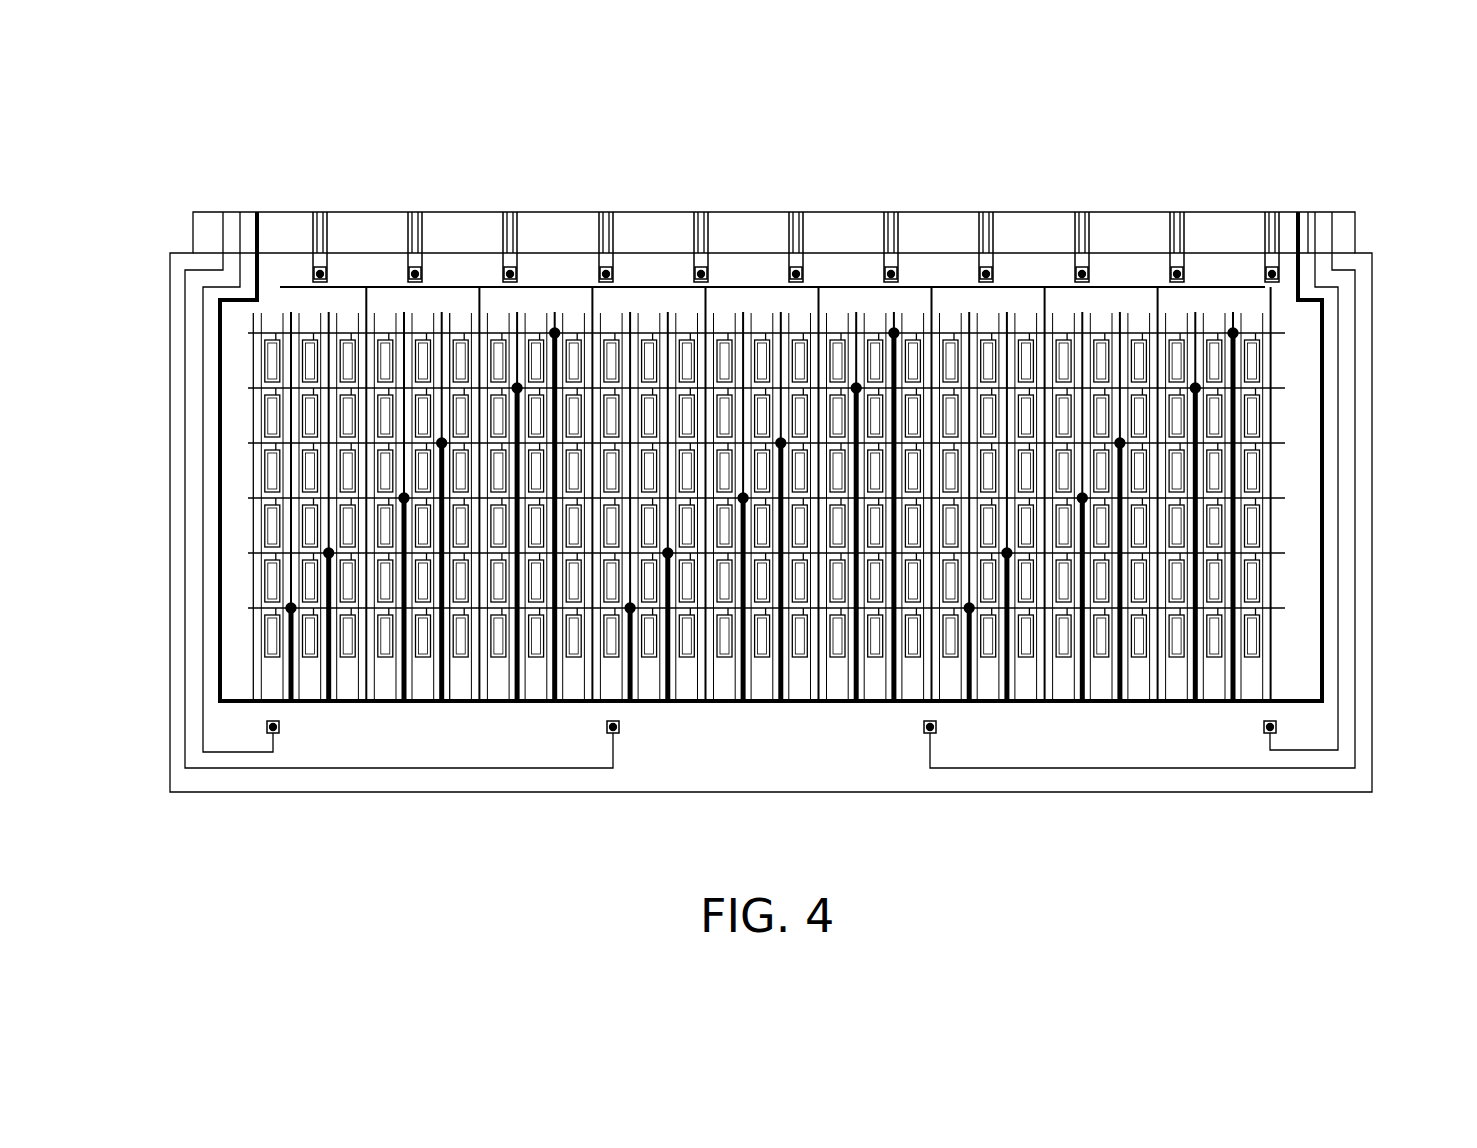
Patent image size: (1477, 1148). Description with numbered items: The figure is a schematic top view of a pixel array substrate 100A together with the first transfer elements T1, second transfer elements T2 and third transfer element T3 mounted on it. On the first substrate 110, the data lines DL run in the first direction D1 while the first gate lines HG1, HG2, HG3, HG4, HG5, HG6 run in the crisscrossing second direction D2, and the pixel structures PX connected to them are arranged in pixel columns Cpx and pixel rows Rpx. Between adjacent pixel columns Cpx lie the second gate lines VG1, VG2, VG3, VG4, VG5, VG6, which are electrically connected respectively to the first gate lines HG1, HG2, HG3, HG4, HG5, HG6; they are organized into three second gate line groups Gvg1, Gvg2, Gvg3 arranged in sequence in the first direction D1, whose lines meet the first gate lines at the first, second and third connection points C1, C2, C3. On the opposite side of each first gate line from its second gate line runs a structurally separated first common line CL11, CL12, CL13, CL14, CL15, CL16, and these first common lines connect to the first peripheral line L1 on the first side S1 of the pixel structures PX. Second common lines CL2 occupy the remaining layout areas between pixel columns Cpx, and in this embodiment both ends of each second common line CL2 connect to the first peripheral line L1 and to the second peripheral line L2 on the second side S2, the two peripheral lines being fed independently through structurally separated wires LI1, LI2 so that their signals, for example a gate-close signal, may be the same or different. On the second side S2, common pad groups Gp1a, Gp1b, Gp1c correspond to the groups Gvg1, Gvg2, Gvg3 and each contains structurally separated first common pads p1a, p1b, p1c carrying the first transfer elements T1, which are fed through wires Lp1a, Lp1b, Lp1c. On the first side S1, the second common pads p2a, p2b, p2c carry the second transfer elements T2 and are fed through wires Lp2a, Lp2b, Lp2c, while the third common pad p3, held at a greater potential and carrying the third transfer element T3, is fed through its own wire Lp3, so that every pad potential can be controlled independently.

The first substrate 110 is at (178, 256).
The pixel array substrate 100A is at (1462, 850).
The wire Lp1c is at (272, 212).
The wire Lp1b is at (900, 235).
The wire Lp1a is at (1280, 232).
The wire Lp2c is at (237, 753).
The wire Lp2b is at (568, 769).
The wire Lp2a is at (1267, 770).
The wire Lp3 is at (1320, 751).
The first transfer element T1 is at (314, 272).
The second transfer element T2 is at (265, 727).
The third transfer element T3 is at (1272, 735).
The first common pad p1c is at (314, 276).
The first common pad p1b is at (606, 283).
The first common pad p1a is at (986, 283).
The second common pad p2c is at (281, 727).
The second common pad p2b is at (621, 727).
The second common pad p2a is at (926, 734).
The third common pad p3 is at (1278, 727).
The common pad group Gp1c is at (411, 838).
The common pad group Gp1b is at (778, 823).
The common pad group Gp1a is at (1106, 883).
The second gate line group Gvg3 is at (548, 118).
The second gate line group Gvg2 is at (888, 118).
The second gate line group Gvg1 is at (1225, 118).
The second gate line VG1 is at (1233, 312).
The second gate line VG2 is at (1195, 312).
The second gate line VG3 is at (1120, 312).
The second gate line VG4 is at (1082, 312).
The second gate line VG5 is at (1028, 183).
The second gate line VG6 is at (969, 312).
The first gate line HG1 is at (1290, 333).
The first gate line HG2 is at (1290, 388).
The first gate line HG3 is at (1290, 443).
The first gate line HG4 is at (1290, 498).
The first gate line HG5 is at (1290, 553).
The first gate line HG6 is at (1290, 608).
The connection point C1 is at (966, 609).
The connection point C2 is at (632, 611).
The connection point C3 is at (289, 607).
The second common line CL2 is at (1043, 688).
The first common line CL11 is at (1233, 701).
The first common line CL12 is at (1195, 701).
The first common line CL13 is at (1120, 701).
The first common line CL14 is at (1082, 701).
The first common line CL15 is at (1007, 701).
The first common line CL16 is at (969, 701).
The wire LI1 is at (1303, 232).
The wire LI2 is at (1248, 215).
The first peripheral line L1 is at (1324, 690).
The second peripheral line L2 is at (1308, 253).
The first direction D1 is at (1430, 92).
The second direction D2 is at (1430, 92).
The first side S1 is at (1400, 655).
The second side S2 is at (1400, 300).
The pixel row Rpx is at (230, 362).
The pixel column Cpx is at (391, 686).
The data line DL is at (450, 676).
The pixel structure PX is at (470, 676).